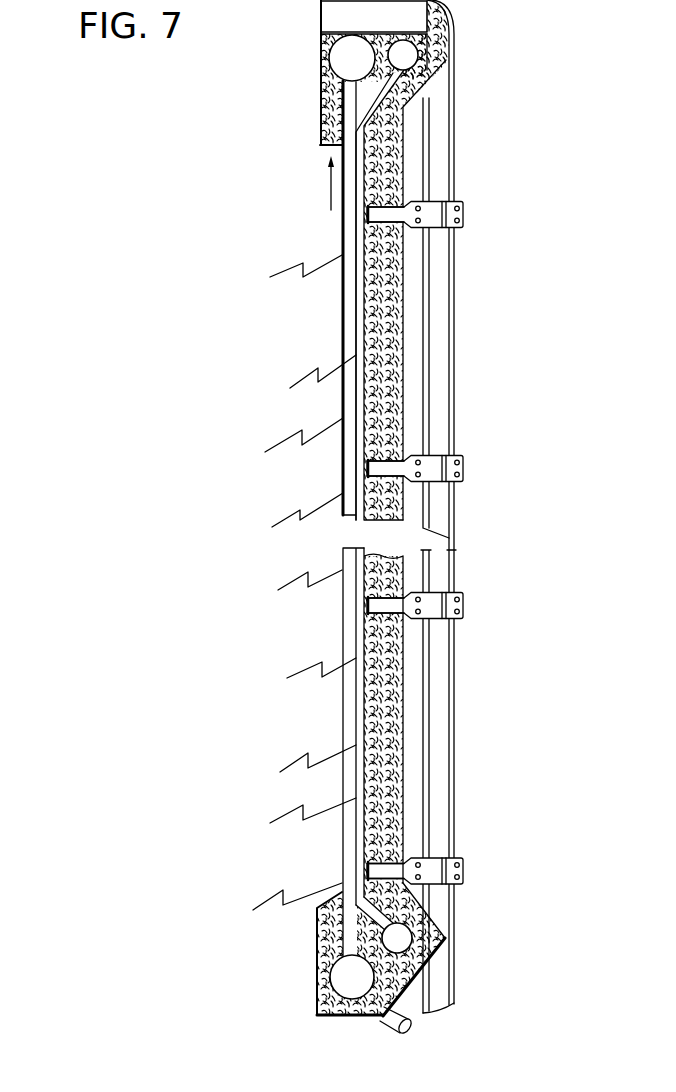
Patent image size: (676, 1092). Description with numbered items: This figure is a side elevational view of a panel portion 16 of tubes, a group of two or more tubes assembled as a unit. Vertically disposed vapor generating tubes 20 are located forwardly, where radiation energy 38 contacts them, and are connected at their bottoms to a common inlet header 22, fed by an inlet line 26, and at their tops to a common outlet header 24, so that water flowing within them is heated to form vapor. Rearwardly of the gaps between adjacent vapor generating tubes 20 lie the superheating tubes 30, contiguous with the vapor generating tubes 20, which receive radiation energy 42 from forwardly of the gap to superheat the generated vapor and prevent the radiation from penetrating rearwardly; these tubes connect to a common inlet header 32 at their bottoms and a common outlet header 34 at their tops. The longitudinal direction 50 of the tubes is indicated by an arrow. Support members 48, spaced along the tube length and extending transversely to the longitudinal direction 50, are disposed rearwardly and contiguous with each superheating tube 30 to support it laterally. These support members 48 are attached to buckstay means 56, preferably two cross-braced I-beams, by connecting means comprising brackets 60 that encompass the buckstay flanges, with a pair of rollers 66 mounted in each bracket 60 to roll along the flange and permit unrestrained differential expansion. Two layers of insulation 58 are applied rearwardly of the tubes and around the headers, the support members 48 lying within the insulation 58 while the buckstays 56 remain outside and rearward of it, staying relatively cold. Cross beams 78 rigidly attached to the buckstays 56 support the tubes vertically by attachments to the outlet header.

The panel portion 16 is at (478, 99).
The vapor generating tubes 20 is at (343, 307).
The inlet header 22 is at (340, 973).
The outlet header 24 is at (345, 63).
The inlet line 26 is at (390, 1026).
The superheating tubes 30 is at (357, 702).
The inlet header 32 is at (408, 940).
The outlet header 34 is at (412, 58).
The radiation energy 38 is at (287, 433).
The radiation energy 42 is at (293, 813).
The support members 48 is at (370, 213).
The longitudinal direction 50 is at (331, 190).
The buckstay means 56 is at (453, 362).
The insulation 58 is at (398, 323).
The brackets 60 is at (435, 450).
The rollers 66 is at (463, 463).
The cross beams 78 is at (350, 25).